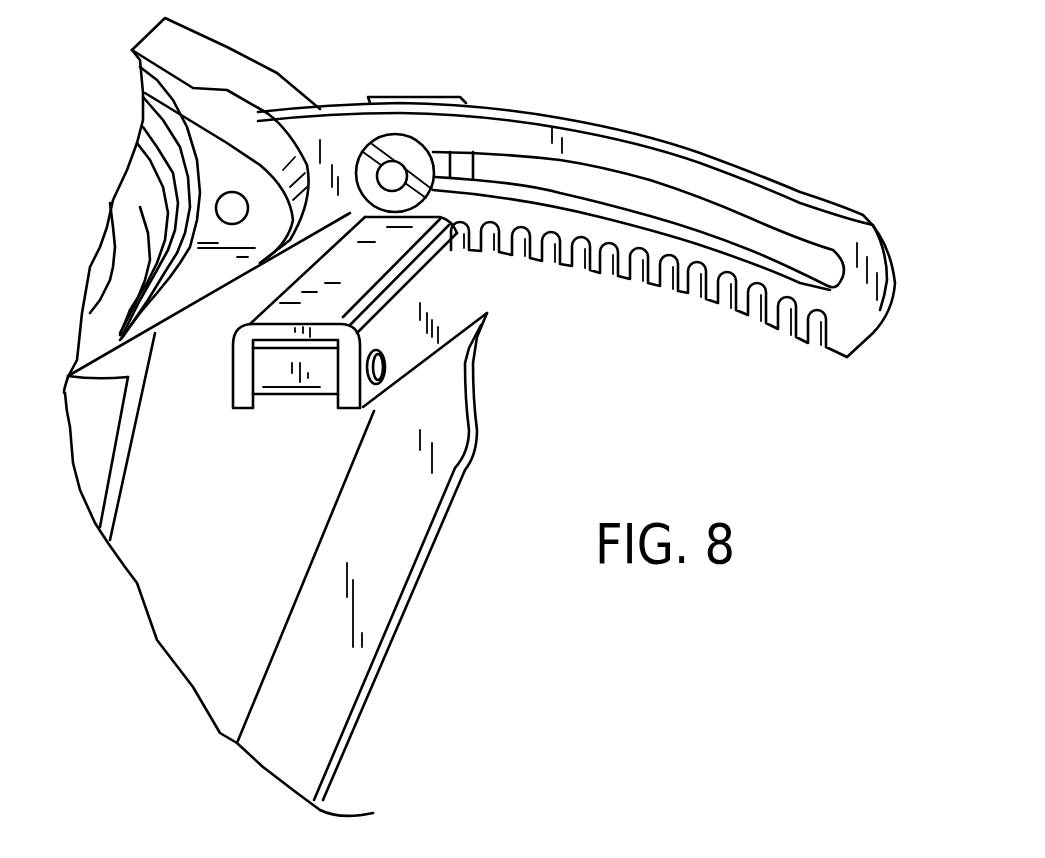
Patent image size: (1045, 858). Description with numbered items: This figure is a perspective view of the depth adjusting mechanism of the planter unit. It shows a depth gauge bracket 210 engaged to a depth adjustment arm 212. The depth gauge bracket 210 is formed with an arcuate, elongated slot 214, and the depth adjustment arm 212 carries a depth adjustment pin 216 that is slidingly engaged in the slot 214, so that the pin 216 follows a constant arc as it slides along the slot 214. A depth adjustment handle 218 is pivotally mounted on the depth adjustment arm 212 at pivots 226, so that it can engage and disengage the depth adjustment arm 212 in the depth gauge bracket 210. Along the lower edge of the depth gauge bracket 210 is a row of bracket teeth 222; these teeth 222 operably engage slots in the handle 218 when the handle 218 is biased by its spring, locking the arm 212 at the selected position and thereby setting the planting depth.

The depth gauge bracket 210 is at (853, 312).
The depth adjustment arm 212 is at (383, 531).
The arcuate, elongated slot 214 is at (650, 186).
The depth adjustment pin 216 is at (390, 180).
The depth adjustment handle 218 is at (463, 302).
The bracket teeth 222 is at (535, 258).
The pivots 226 is at (386, 365).